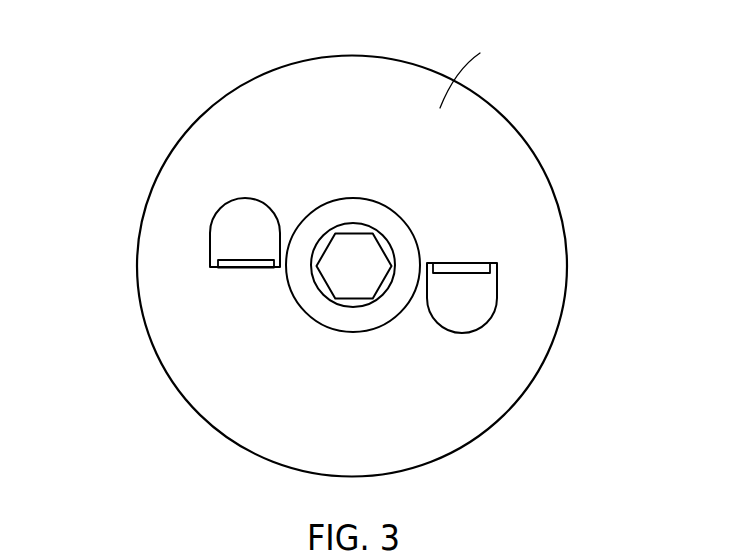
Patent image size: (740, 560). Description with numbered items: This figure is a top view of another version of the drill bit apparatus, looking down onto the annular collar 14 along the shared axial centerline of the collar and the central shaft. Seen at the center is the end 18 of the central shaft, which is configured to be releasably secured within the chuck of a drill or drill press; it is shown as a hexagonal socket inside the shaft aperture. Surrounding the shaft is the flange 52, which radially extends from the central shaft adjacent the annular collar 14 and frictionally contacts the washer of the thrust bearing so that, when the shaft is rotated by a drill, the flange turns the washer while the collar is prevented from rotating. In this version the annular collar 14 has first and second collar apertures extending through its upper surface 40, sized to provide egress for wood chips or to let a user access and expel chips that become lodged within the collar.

The annular collar 14 is at (503, 152).
The upper surface 40 is at (479, 66).
The flange 52 is at (313, 322).
The one end 18 is at (368, 273).